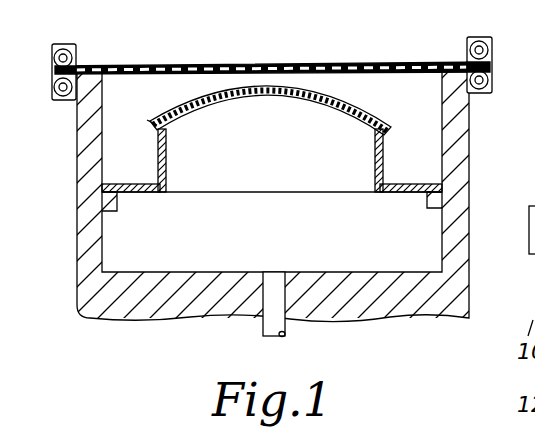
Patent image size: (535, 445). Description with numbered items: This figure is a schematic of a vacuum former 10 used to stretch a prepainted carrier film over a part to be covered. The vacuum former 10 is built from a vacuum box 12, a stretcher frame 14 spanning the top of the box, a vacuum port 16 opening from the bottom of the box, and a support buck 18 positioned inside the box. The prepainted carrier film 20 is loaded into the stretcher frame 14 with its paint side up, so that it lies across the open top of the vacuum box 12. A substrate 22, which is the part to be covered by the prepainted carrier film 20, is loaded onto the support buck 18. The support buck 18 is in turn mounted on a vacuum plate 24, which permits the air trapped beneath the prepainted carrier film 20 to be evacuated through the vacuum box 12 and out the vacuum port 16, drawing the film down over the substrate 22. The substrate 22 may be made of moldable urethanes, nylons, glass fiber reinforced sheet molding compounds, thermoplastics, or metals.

The vacuum former 10 is at (480, 122).
The vacuum box 12 is at (470, 178).
The stretcher frame 14 is at (467, 48).
The vacuum port 16 is at (263, 330).
The support buck 18 is at (158, 158).
The prepainted carrier film 20 is at (290, 65).
The substrate 22 is at (147, 122).
The vacuum plate 24 is at (125, 193).